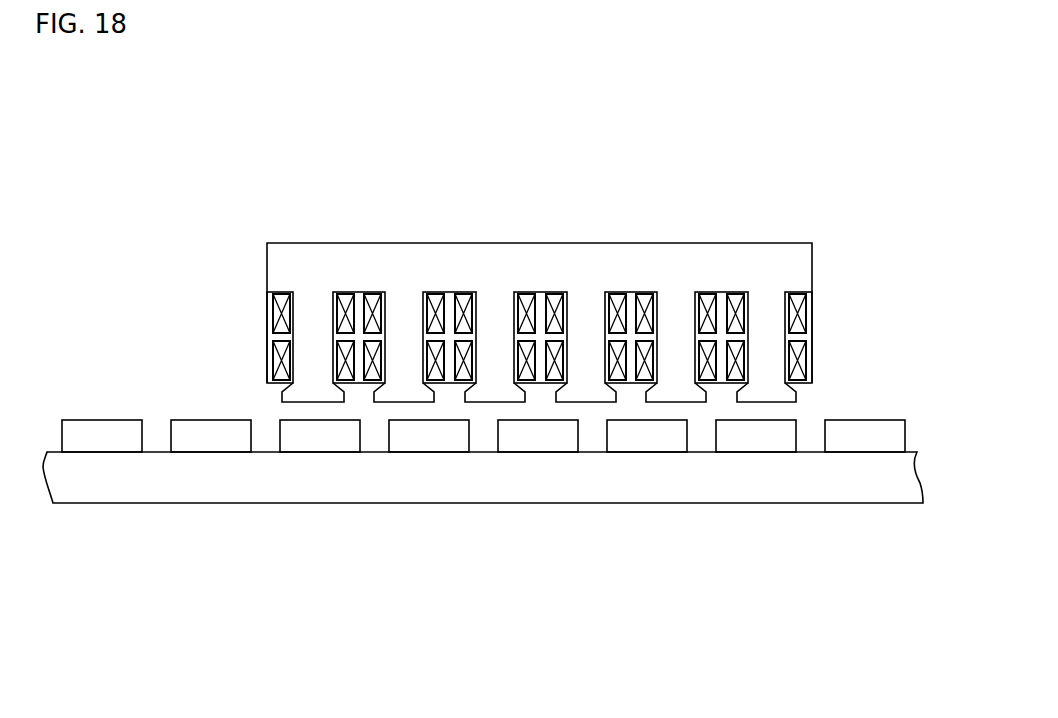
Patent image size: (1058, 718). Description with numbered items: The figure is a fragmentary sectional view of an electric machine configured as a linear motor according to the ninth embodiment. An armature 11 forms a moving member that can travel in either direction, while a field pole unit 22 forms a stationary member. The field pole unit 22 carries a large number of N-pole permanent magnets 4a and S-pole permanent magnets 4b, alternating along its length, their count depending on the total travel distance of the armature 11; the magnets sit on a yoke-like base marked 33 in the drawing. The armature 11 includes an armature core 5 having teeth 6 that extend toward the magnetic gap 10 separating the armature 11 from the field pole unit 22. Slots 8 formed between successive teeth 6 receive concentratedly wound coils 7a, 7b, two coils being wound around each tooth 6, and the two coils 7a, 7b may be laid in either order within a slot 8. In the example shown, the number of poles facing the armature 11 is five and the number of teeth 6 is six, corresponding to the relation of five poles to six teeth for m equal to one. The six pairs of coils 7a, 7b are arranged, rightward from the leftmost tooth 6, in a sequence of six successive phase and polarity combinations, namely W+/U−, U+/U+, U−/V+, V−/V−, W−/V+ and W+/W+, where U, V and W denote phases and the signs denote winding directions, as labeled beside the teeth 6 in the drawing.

The armature 11 is at (616, 173).
The magnetic gap 10 is at (307, 411).
The armature core 5 is at (400, 264).
The teeth 6 is at (500, 341).
The slots 8 is at (358, 343).
The coil 7a is at (524, 300).
The coil 7b is at (530, 358).
The field pole unit 22 is at (370, 563).
The field yoke 33 is at (210, 490).
The N-pole permanent magnets 4a is at (301, 440).
The S-pole permanent magnets 4b is at (403, 440).